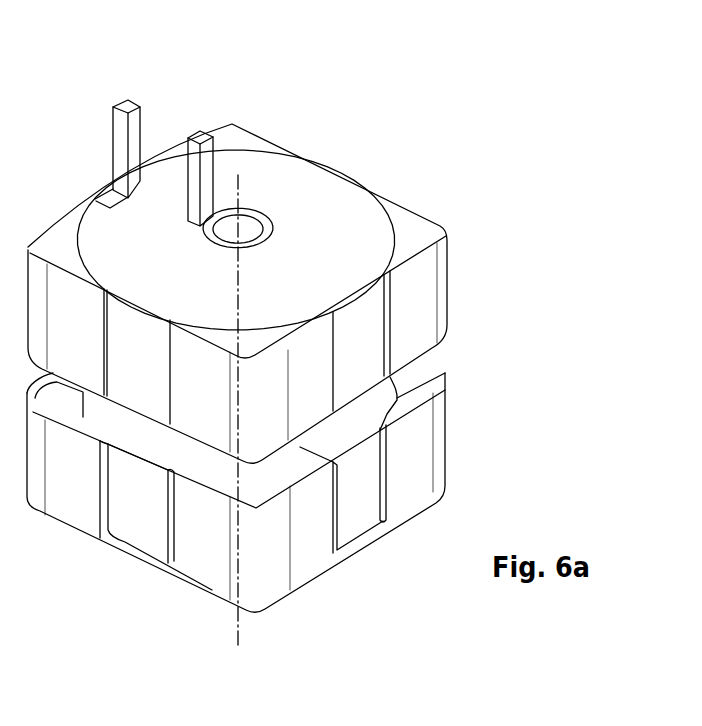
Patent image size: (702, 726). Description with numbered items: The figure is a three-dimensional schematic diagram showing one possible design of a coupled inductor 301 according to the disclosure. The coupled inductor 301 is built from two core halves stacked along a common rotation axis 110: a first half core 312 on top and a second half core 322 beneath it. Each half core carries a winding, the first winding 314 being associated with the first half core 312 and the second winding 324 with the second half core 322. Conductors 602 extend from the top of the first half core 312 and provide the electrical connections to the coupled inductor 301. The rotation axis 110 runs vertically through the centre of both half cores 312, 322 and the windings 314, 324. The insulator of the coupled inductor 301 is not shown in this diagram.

The coupled inductor 301 is at (423, 106).
The first half core 312 is at (266, 217).
The first winding 314 is at (396, 212).
The rotation axis 110 is at (240, 175).
The conductors 602 is at (127, 93).
The second half core 322 is at (310, 587).
The second winding 324 is at (147, 539).